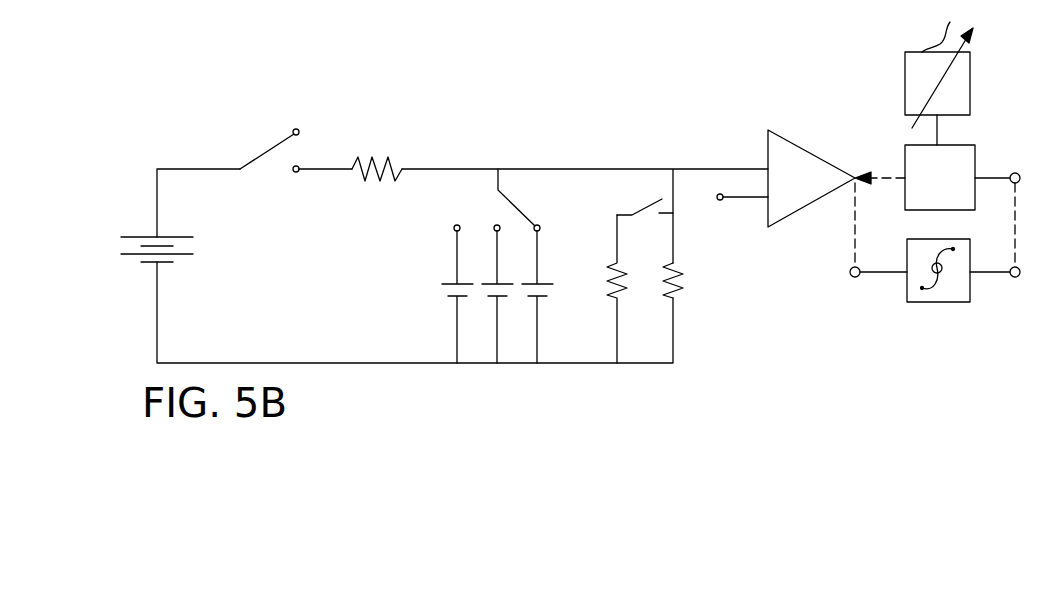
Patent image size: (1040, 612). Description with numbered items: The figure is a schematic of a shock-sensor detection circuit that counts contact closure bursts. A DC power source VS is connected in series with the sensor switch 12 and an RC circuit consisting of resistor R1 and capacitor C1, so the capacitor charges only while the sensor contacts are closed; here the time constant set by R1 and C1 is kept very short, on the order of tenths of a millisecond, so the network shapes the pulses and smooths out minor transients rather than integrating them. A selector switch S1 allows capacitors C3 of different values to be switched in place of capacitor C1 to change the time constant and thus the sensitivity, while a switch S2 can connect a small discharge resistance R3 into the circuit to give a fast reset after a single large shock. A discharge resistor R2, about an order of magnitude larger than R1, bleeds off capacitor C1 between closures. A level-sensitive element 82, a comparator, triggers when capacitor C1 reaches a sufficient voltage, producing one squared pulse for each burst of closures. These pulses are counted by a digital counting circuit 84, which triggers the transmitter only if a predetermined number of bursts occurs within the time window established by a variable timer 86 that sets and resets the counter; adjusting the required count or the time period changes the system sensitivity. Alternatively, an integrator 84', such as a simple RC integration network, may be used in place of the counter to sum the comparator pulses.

The sensor switch 12 is at (258, 157).
The level-sensitive element 82 is at (810, 150).
The digital counting circuit 84 is at (943, 188).
The integrator 84' is at (935, 292).
The variable timer 86 is at (905, 74).
The resistor R1 is at (360, 154).
The discharge resistor R2 is at (691, 284).
The discharge resistance R3 is at (614, 293).
The capacitor C1 is at (539, 307).
The capacitor C3 is at (452, 282).
The selector switch S1 is at (519, 200).
The switch S2 is at (642, 212).
The DC power source VS is at (131, 244).